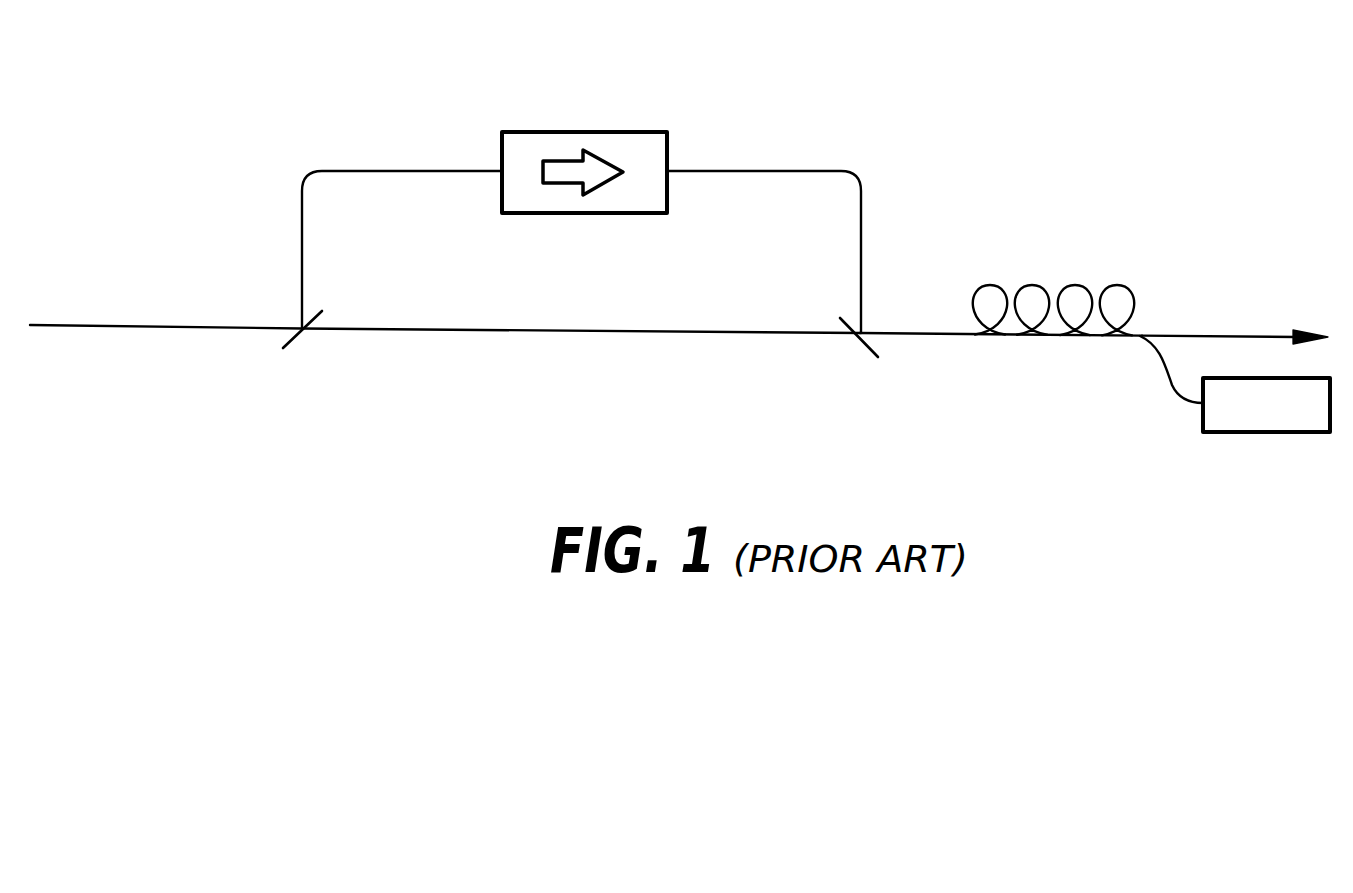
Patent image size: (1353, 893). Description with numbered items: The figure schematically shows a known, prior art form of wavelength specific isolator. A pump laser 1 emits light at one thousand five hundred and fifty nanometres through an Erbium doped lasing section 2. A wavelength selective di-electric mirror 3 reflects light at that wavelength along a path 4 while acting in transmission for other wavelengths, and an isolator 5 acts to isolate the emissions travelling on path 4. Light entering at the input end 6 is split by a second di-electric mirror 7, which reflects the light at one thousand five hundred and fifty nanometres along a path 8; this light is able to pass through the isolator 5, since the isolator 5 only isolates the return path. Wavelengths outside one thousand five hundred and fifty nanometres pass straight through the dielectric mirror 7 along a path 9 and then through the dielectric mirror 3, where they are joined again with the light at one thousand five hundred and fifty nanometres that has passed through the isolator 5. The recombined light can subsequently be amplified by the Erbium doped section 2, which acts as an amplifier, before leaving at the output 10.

The pump laser 1 is at (1224, 434).
The Erbium doped lasing section 2 is at (1039, 275).
The wavelength selective di-electric mirror 3 is at (850, 349).
The path 4 is at (855, 238).
The isolator 5 is at (646, 132).
The input end 6 is at (54, 331).
The second di-electric mirror 7 is at (300, 346).
The path 8 is at (307, 238).
The path 9 is at (683, 339).
The output 10 is at (1285, 247).